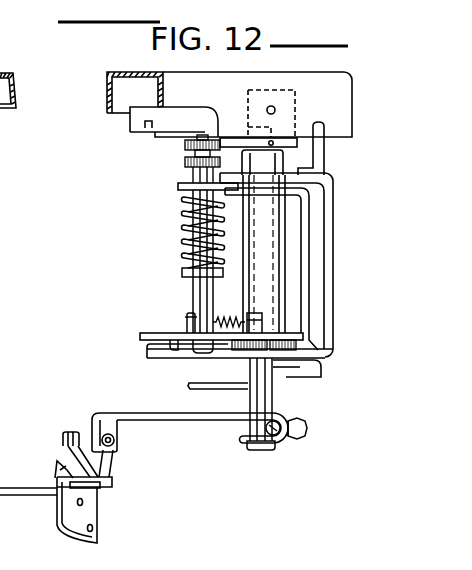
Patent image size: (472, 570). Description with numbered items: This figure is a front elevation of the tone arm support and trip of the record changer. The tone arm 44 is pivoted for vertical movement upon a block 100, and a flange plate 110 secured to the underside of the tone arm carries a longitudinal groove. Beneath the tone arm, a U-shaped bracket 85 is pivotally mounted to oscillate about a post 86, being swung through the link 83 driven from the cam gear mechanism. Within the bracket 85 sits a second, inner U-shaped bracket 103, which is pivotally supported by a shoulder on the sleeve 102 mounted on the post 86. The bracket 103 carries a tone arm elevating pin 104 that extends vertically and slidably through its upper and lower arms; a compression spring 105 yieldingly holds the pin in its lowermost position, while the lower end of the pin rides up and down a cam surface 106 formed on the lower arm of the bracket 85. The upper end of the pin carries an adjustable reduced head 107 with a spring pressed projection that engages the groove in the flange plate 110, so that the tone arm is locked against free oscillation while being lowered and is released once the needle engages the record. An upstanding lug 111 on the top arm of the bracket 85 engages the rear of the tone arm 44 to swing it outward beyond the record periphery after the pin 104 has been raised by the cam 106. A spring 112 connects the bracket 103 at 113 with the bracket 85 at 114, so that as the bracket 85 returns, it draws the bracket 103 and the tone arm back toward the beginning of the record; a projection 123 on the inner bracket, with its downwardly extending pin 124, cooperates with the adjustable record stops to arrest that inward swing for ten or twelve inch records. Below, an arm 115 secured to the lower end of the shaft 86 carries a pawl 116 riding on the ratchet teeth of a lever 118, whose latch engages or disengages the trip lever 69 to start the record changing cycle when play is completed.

The tone arm 44 is at (338, 97).
The flange plate 110 is at (137, 125).
The adjustable reduced head 107 is at (192, 136).
The block 100 is at (292, 143).
The upstanding lug 111 is at (325, 156).
The sleeve 102 is at (281, 206).
The U-shaped bracket 85 is at (333, 222).
The U-shaped bracket 103 is at (308, 255).
The compression spring 105 is at (186, 222).
The tone arm elevating pin 104 is at (195, 287).
The connection point on bracket 85 114 is at (186, 319).
The spring 112 is at (226, 314).
The connection point on bracket 103 113 is at (258, 321).
The projection 123 is at (142, 334).
The downwardly extending pin 124 is at (160, 348).
The cam surface 106 is at (182, 354).
The post 86 is at (266, 398).
The link 83 is at (205, 390).
The arm 115 is at (201, 415).
The pawl 116 is at (103, 462).
The lever 118 is at (56, 467).
The lever 69 is at (40, 494).